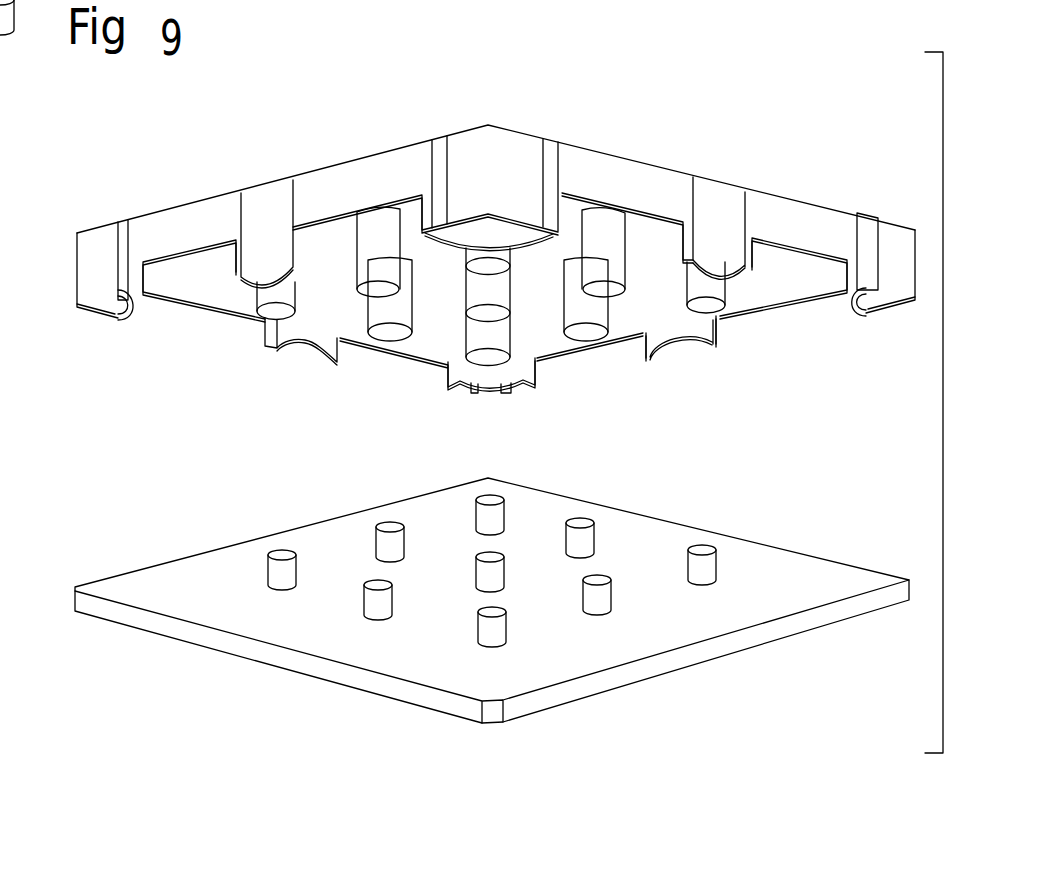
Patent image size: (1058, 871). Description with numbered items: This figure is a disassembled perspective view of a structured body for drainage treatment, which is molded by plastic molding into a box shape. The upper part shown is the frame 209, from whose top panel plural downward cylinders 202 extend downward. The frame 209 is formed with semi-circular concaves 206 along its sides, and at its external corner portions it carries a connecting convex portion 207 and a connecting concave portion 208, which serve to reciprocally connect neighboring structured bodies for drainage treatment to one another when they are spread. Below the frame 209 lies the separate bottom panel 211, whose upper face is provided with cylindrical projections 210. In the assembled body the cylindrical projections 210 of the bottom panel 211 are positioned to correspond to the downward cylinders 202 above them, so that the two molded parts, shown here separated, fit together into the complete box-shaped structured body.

The downward cylinders 202 is at (378, 222).
The semi-circular concaves 206 is at (261, 217).
The connecting convex portion 207 is at (438, 148).
The connecting concave portion 208 is at (122, 243).
The frame 209 is at (784, 222).
The cylindrical projections 210 is at (278, 556).
The bottom panel 211 is at (695, 622).